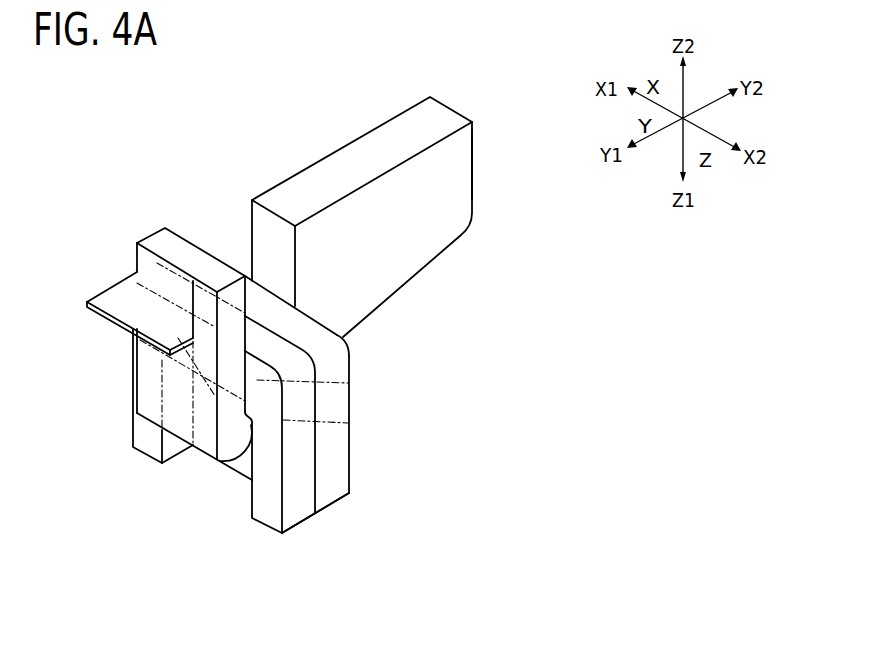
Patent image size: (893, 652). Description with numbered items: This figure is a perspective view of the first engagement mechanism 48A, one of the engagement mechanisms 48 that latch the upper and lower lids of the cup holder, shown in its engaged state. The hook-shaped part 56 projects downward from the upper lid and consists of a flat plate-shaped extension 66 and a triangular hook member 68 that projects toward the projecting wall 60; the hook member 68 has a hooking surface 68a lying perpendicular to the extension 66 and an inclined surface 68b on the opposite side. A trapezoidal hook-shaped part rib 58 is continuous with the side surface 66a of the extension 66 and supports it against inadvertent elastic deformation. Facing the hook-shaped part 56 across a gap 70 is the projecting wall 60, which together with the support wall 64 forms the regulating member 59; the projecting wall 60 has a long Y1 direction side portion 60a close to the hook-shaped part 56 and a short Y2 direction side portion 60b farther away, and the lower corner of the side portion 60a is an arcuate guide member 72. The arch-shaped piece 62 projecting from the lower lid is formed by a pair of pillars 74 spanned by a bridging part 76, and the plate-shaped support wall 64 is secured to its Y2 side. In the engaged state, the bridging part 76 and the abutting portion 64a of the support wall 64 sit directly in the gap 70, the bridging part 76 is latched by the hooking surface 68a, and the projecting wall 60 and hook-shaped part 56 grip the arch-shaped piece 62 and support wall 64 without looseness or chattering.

The first engagement mechanism 48A is at (175, 124).
The engagement mechanism 48 is at (293, 334).
The hook-shaped part rib 58 is at (105, 293).
The bridging part 76 is at (143, 352).
The gap 70 is at (207, 223).
The extension 66 is at (155, 242).
The side surface in the Y1 direction 66a is at (137, 378).
The arch-shaped piece 62 is at (135, 458).
The hook-shaped part 56 is at (201, 457).
The regulating member 59 is at (371, 334).
The projecting wall 60 is at (417, 255).
The Y1 direction side portion 60a is at (267, 226).
The Y2 direction side portion 60b is at (477, 153).
The support wall 64 is at (325, 420).
The abutting portion 64a is at (312, 312).
The guide member 72 is at (355, 356).
The hook member 68 is at (308, 446).
The hooking surface 68a is at (348, 423).
The inclined surface 68b is at (348, 384).
The pillar 74 is at (295, 507).